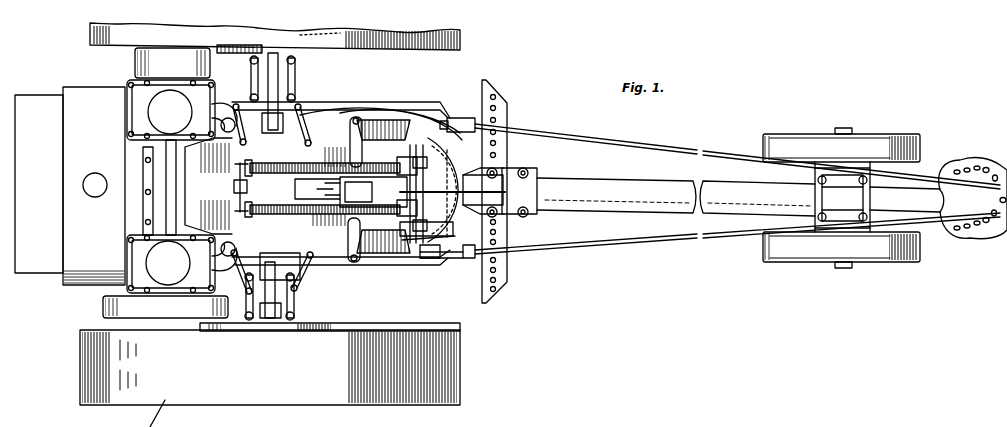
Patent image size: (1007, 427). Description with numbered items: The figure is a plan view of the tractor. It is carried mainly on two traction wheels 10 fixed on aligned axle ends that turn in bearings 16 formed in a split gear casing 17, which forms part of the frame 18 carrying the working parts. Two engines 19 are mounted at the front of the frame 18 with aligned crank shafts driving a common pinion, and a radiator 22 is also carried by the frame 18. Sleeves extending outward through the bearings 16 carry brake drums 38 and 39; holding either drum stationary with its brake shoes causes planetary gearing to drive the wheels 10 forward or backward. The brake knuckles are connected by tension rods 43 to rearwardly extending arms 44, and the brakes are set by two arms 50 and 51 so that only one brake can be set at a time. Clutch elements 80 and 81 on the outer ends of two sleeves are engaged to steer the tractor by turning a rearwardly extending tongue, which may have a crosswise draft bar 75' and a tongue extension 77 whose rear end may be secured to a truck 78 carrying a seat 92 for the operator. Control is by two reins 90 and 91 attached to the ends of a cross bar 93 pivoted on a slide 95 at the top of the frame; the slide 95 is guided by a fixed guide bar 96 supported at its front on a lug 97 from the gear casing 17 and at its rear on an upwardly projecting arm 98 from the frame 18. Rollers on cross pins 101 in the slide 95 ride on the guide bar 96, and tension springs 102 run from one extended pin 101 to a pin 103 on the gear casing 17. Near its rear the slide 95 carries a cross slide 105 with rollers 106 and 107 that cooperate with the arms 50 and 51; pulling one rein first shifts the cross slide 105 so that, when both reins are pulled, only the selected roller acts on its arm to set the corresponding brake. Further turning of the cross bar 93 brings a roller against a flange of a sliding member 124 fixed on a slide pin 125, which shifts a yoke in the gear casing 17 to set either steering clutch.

The traction wheel 10 is at (430, 48).
The bearing 16 is at (293, 78).
The split gear casing 17 is at (263, 222).
The frame 18 is at (43, 268).
The engine 19 is at (170, 183).
The radiator 22 is at (95, 273).
The brake drum 38 is at (332, 325).
The brake drum 39 is at (333, 53).
The tension rod 43 is at (448, 123).
The rearwardly extending arm 44 is at (500, 242).
The arm 50 is at (500, 223).
The arm 51 is at (488, 160).
The crosswise draft bar 75' is at (515, 192).
The tongue extension 77 is at (630, 197).
The truck 78 is at (838, 218).
The clutch element 80 is at (388, 250).
The clutch element 81 is at (375, 125).
The rein 90 is at (632, 243).
The rein 91 is at (640, 147).
The seat 92 is at (980, 232).
The cross bar 93 is at (352, 138).
The slide 95 is at (345, 225).
The guide bar 96 is at (502, 172).
The lug 97 is at (351, 192).
The arm 98 is at (535, 175).
The cross pin 101 is at (408, 250).
The tension spring 102 is at (280, 173).
The pin 103 is at (255, 156).
The cross slide 105 is at (508, 122).
The roller 106 is at (422, 262).
The roller 107 is at (403, 153).
The sliding member 124 is at (430, 258).
The slide pin 125 is at (382, 225).